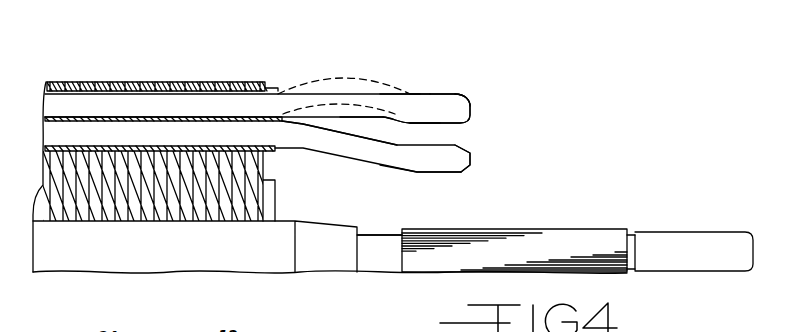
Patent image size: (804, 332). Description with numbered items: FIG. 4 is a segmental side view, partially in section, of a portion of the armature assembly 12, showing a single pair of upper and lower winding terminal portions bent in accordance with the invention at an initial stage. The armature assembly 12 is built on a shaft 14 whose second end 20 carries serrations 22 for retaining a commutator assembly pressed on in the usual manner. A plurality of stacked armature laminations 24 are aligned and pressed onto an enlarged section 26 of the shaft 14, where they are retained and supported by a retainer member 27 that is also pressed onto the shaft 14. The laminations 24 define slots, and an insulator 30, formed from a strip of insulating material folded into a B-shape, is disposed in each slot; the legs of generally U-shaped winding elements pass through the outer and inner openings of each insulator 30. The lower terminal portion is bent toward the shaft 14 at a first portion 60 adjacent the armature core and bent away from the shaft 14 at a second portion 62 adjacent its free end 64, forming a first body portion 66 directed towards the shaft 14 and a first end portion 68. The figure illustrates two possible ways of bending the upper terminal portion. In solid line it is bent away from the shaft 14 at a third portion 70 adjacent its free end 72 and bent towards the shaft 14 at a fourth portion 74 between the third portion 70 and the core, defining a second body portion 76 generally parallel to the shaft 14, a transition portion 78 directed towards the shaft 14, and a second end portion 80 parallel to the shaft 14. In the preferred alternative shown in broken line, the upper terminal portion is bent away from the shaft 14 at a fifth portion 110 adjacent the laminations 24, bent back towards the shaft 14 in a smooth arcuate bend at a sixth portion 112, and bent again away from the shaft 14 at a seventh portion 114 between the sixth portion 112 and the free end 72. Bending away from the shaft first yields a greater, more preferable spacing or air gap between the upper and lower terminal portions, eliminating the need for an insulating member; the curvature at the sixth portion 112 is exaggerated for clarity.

The armature assembly 12 is at (214, 54).
The shaft 14 is at (540, 209).
The second end 20 is at (683, 243).
The serrations 22 is at (590, 238).
The armature laminations 24 is at (118, 83).
The enlarged section 26 is at (211, 243).
The retainer member 27 is at (268, 210).
The insulator 30 is at (163, 148).
The first portion 60 is at (300, 131).
The second portion 62 is at (407, 157).
The free end 64 is at (473, 157).
The first body portion 66 is at (357, 147).
The first end portion 68 is at (460, 160).
The third portion 70 is at (440, 110).
The free end 72 is at (473, 107).
The fourth portion 74 is at (387, 107).
The second body portion 76 is at (353, 108).
The transition portion 78 is at (409, 110).
The second end portion 80 is at (458, 110).
The fifth portion 110 is at (283, 93).
The sixth portion 112 is at (338, 84).
The seventh portion 114 is at (417, 92).